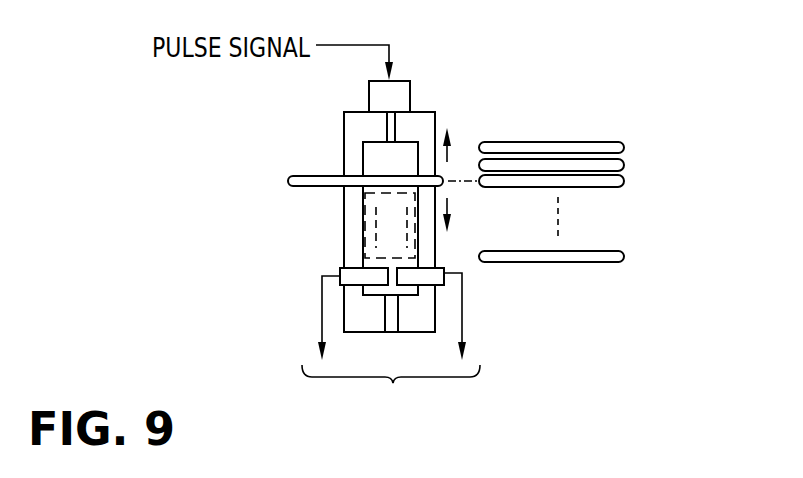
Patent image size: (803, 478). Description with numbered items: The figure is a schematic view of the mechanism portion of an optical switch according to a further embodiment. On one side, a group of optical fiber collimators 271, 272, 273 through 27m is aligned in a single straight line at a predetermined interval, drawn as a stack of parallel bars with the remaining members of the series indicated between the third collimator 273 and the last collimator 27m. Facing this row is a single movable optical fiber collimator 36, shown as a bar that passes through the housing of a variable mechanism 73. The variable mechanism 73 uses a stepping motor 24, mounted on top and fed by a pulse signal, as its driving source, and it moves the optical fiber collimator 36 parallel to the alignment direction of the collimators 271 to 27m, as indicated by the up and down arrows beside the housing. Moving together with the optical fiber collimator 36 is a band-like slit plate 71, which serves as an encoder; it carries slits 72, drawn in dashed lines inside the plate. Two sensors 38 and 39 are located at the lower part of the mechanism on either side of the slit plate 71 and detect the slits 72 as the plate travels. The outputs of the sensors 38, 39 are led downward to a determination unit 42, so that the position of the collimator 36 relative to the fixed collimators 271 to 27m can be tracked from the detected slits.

The stepping motor 24 is at (369, 92).
The variable mechanism 73 is at (418, 111).
The band-like slit plate (encoder) 71 is at (400, 153).
The slits 72 is at (372, 258).
The optical fiber collimator 36 is at (305, 176).
The sensor 38 is at (343, 272).
The sensor 39 is at (457, 273).
The determination unit 42 is at (397, 407).
The optical fiber collimator 271 is at (550, 142).
The optical fiber collimator 272 is at (618, 163).
The optical fiber collimator 273 is at (612, 186).
The optical fiber collimator 27m is at (590, 263).